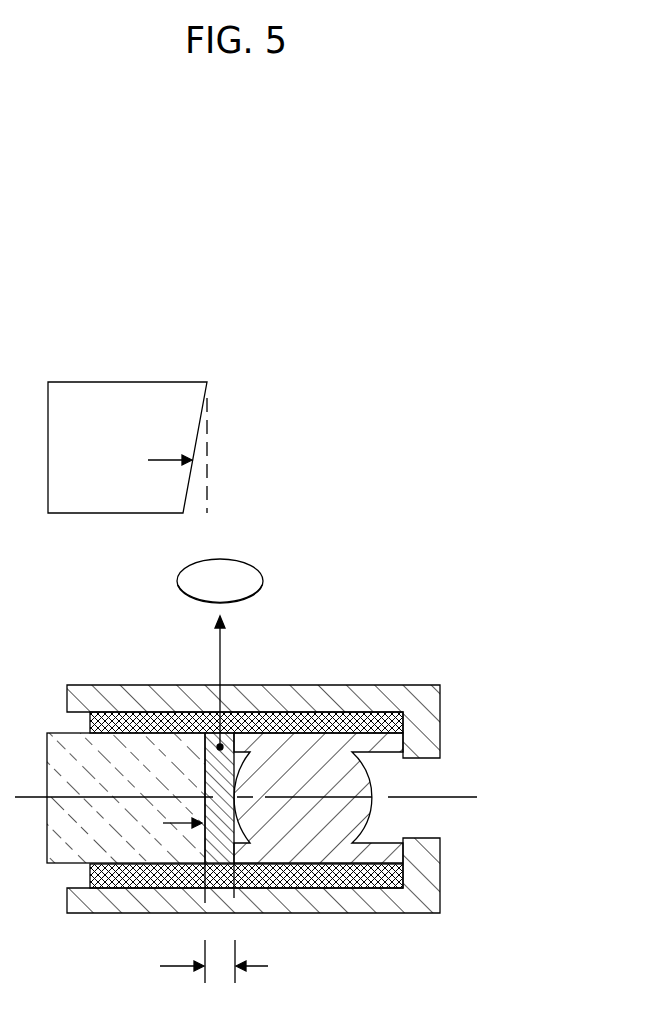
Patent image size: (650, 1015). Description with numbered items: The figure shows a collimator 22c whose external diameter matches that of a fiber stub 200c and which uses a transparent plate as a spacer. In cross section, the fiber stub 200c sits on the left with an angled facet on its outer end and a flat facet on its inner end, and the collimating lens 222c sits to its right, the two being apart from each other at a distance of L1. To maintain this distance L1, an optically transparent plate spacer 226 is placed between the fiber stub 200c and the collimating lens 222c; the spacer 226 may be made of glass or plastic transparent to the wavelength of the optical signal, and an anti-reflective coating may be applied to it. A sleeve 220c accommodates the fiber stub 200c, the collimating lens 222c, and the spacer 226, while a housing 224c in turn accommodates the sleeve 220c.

The optical module 22c is at (323, 379).
The fiber stub 200c is at (127, 752).
The sleeve 220c is at (341, 712).
The collimating lens 222c is at (323, 825).
The housing 224c is at (433, 882).
The spacer 226 is at (243, 572).
The distance L1 is at (214, 961).